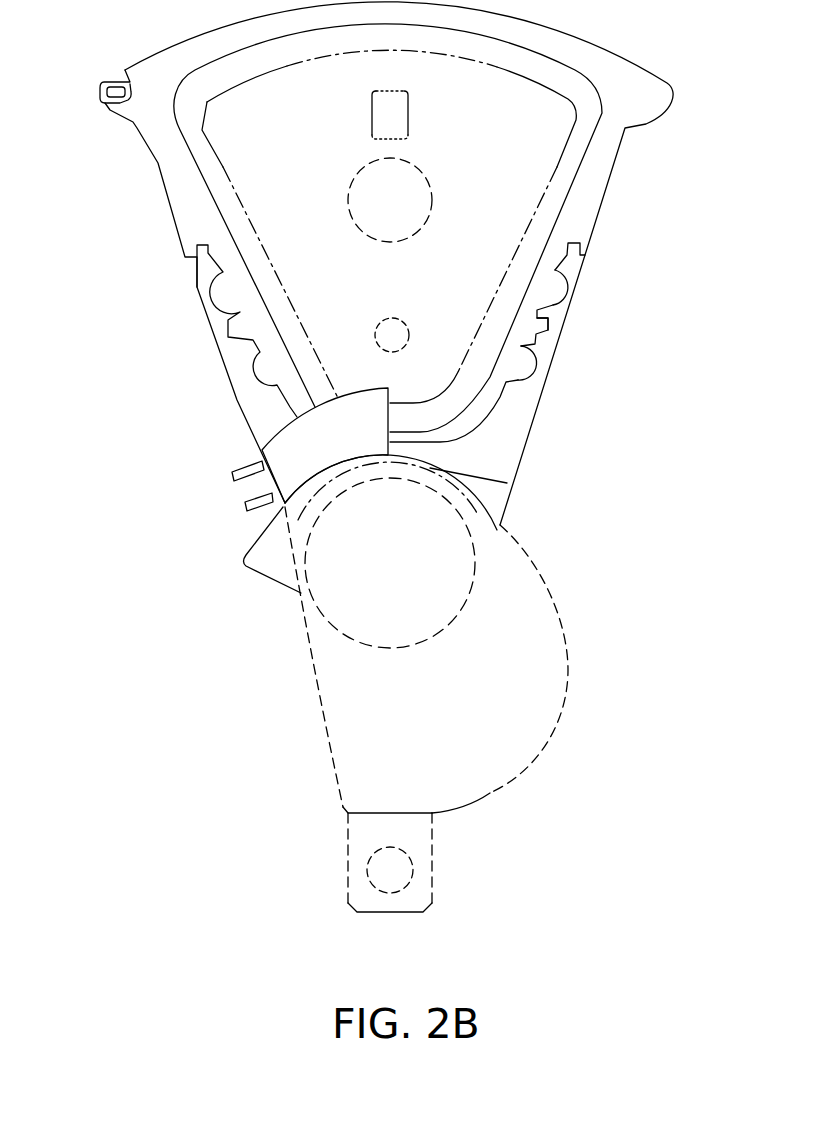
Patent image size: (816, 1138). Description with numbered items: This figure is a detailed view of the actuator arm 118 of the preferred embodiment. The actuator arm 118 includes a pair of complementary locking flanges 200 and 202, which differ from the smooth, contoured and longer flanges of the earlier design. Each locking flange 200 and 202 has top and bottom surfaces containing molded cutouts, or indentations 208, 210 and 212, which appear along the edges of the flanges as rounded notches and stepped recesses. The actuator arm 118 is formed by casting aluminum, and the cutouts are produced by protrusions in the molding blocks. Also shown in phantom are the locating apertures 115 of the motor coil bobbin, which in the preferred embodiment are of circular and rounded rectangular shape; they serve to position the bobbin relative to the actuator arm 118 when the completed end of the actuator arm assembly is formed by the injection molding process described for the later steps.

The locating apertures 115 is at (366, 328).
The actuator arm 118 is at (580, 524).
The locking flange 200 is at (493, 447).
The locking flange 202 is at (262, 407).
The indentation 208 is at (522, 366).
The indentation 210 is at (536, 331).
The indentation 212 is at (556, 290).